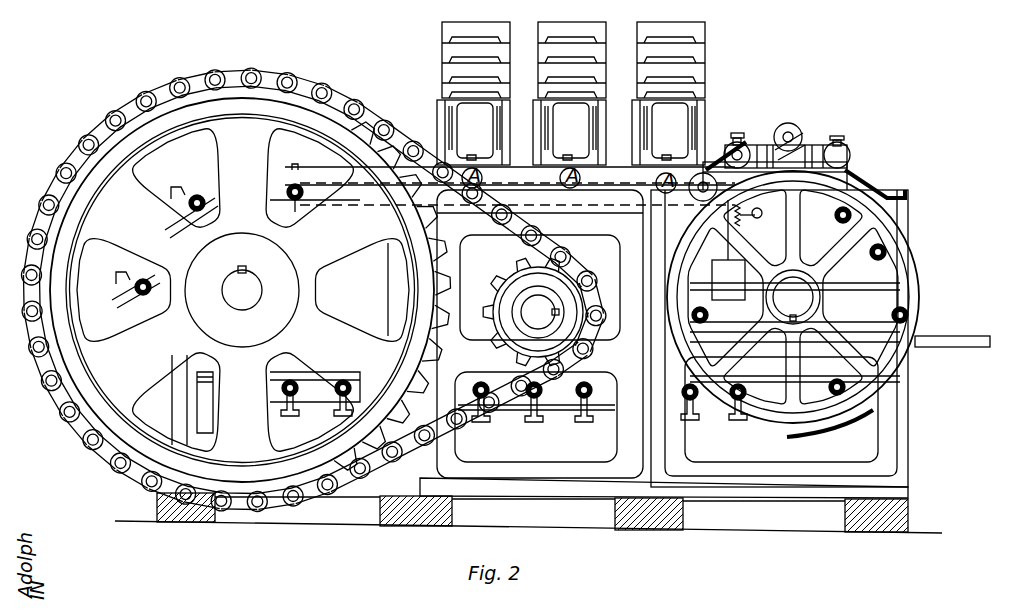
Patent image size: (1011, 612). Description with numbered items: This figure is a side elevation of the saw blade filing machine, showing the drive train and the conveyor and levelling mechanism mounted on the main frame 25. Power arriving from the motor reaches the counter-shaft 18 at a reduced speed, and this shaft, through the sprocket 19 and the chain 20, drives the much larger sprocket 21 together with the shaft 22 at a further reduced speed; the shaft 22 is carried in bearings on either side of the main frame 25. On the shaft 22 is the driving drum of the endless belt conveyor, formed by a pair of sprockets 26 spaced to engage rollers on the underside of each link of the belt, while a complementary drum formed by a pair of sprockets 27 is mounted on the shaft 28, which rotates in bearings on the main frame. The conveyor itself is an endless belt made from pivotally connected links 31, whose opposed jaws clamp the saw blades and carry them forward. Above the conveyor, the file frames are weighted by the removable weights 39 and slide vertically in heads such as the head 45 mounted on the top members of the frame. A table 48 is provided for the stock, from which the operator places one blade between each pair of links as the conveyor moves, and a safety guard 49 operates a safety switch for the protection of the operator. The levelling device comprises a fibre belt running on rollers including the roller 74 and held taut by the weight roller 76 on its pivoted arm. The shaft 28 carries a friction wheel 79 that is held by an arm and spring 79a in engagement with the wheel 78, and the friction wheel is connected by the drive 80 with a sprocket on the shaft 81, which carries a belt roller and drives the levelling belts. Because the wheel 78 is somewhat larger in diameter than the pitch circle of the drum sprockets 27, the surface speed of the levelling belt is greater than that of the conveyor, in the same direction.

The counter-shaft 18 is at (527, 312).
The sprocket 19 is at (513, 286).
The chain 20 is at (322, 95).
The sprocket 21 is at (250, 290).
The shaft 22 is at (240, 301).
The main frame 25 is at (166, 400).
The sprockets 26 is at (330, 284).
The sprockets 27 is at (705, 285).
The shaft 28 is at (793, 297).
The links 31 is at (129, 305).
The removable weights 39 is at (441, 48).
The head 45 is at (571, 132).
The table 48 is at (990, 337).
The safety guard 49 is at (900, 190).
The roller 74 is at (850, 153).
The weight roller 76 is at (798, 132).
The wheel 78 is at (912, 298).
The friction wheel 79 is at (598, 204).
The arm and spring 79a is at (746, 229).
The drive 80 is at (708, 160).
The shaft 81 is at (744, 148).